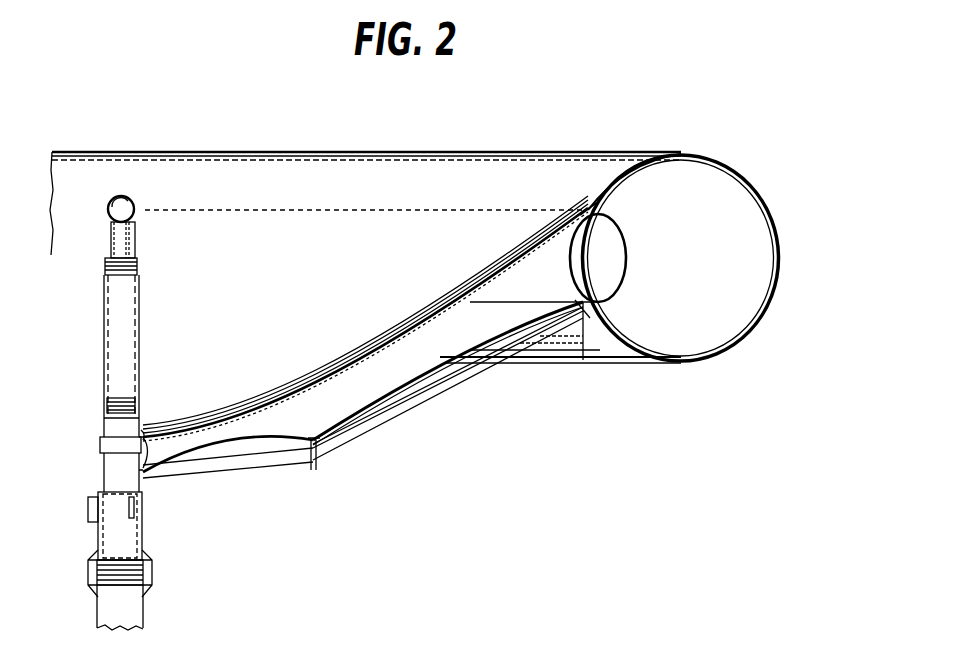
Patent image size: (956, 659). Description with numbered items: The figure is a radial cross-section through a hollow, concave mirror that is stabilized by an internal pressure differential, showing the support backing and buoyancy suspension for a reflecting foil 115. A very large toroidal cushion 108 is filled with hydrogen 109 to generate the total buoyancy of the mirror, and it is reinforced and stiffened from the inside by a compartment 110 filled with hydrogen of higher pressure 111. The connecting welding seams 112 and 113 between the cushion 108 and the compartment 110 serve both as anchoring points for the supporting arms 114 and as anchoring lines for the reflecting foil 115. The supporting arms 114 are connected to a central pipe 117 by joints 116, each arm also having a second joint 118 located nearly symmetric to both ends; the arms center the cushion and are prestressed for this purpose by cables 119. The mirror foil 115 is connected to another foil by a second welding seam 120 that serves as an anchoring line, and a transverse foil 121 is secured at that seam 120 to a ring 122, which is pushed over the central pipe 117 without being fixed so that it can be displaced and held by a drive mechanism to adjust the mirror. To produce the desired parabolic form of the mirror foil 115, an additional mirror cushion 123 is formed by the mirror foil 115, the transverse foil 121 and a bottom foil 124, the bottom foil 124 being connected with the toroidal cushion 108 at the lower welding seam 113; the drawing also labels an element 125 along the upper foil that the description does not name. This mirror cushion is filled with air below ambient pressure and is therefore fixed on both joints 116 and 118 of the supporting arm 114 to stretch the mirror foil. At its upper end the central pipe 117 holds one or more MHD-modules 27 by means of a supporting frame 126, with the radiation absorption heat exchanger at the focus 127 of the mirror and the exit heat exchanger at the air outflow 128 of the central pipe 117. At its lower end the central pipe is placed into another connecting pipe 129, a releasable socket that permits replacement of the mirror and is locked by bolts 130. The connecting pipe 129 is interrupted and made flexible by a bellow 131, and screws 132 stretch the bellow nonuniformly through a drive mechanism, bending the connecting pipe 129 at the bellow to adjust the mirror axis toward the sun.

The MHD-module 27 is at (135, 240).
The toroidal cushion 108 is at (708, 360).
The hydrogen 109 is at (730, 316).
The compartment 110 is at (625, 282).
The hydrogen of higher pressure 111 is at (566, 250).
The welding seam 112 is at (588, 208).
The lower welding seam 113 is at (584, 320).
The supporting arm 114 is at (372, 412).
The reflecting foil 115 is at (365, 357).
The joint 116 is at (142, 485).
The central pipe 117 is at (110, 476).
The second joint 118 is at (320, 453).
The cable 119 is at (448, 392).
The second welding seam 120 is at (143, 437).
The transverse foil 121 is at (173, 460).
The ring 122 is at (116, 444).
The mirror cushion 123 is at (318, 390).
The bottom foil 124 is at (232, 440).
The strap 125 is at (287, 413).
The supporting frame 126 is at (139, 293).
The focus 127 is at (131, 203).
The air outflow 128 is at (118, 325).
The connecting pipe 129 is at (134, 614).
The bolt 130 is at (90, 506).
The bellow 131 is at (126, 562).
The screw 132 is at (152, 572).